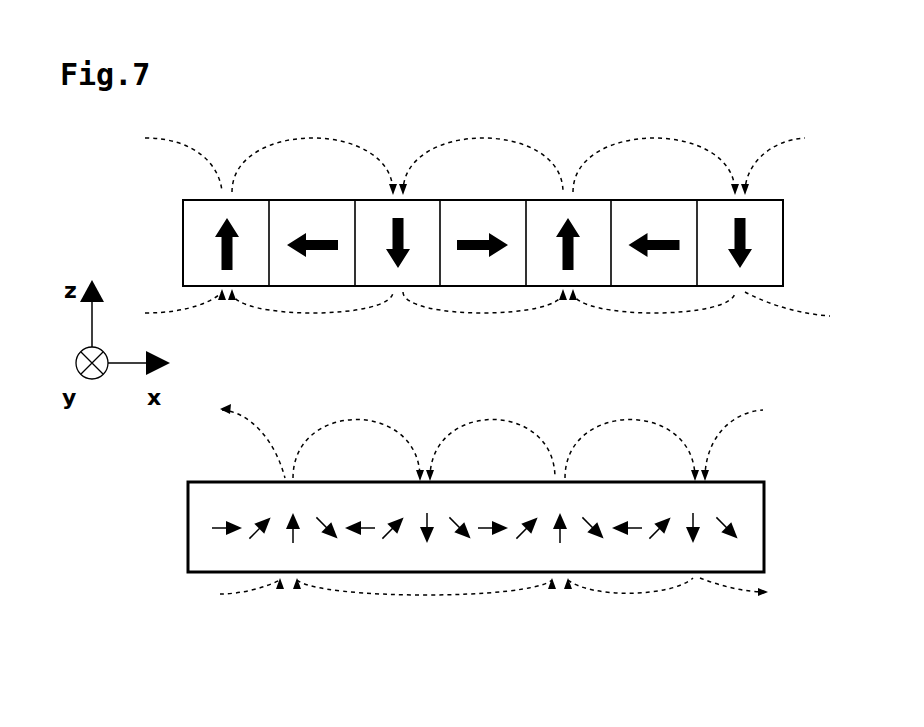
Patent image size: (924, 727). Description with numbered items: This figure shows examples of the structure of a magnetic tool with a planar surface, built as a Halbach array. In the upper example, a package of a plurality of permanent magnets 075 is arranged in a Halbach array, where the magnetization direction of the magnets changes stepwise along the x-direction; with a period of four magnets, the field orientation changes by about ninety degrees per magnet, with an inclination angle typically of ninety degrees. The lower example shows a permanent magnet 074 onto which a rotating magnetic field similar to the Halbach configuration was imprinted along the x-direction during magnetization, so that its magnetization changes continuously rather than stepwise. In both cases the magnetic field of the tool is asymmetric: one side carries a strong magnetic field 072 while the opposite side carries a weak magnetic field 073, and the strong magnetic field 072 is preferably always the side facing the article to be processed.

The strong magnetic field side 072 is at (803, 147).
The weak magnetic field side 073 is at (693, 312).
The permanent magnet with continuously changing magnetization 074 is at (763, 540).
The permanent magnets 075 is at (767, 267).